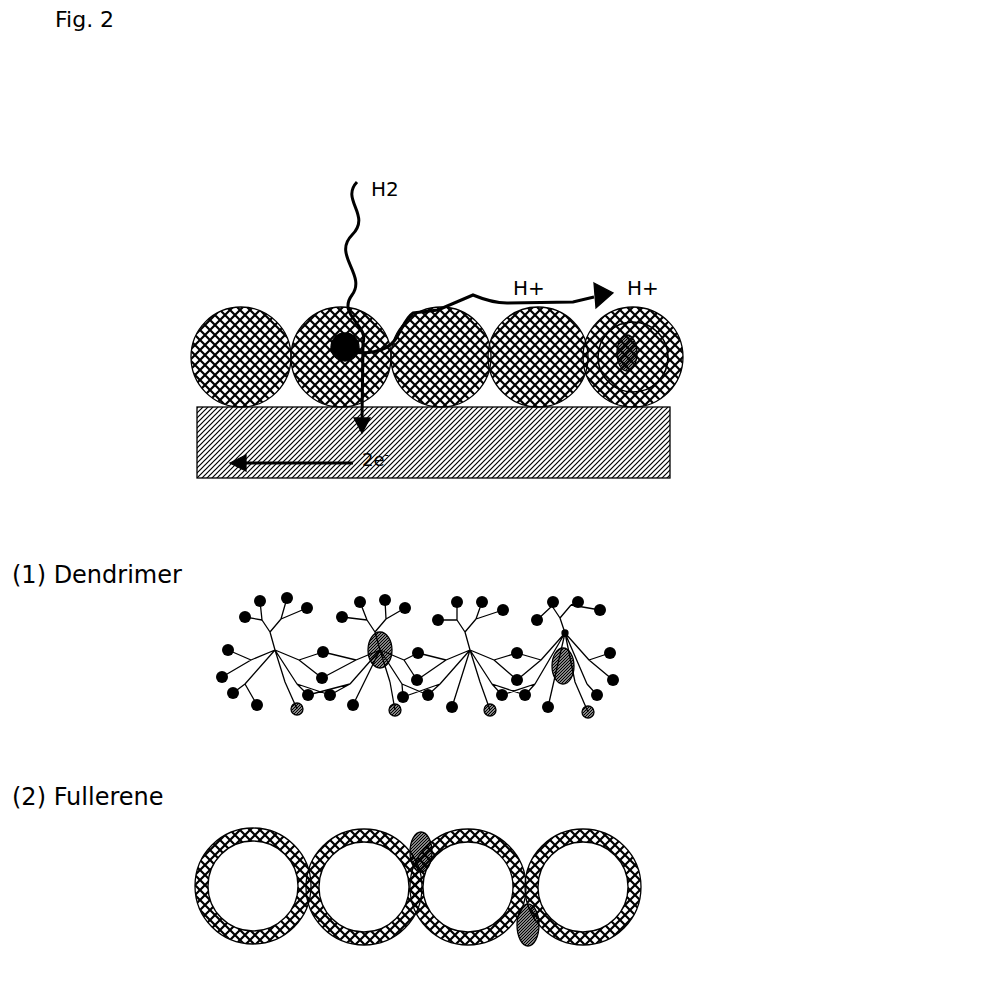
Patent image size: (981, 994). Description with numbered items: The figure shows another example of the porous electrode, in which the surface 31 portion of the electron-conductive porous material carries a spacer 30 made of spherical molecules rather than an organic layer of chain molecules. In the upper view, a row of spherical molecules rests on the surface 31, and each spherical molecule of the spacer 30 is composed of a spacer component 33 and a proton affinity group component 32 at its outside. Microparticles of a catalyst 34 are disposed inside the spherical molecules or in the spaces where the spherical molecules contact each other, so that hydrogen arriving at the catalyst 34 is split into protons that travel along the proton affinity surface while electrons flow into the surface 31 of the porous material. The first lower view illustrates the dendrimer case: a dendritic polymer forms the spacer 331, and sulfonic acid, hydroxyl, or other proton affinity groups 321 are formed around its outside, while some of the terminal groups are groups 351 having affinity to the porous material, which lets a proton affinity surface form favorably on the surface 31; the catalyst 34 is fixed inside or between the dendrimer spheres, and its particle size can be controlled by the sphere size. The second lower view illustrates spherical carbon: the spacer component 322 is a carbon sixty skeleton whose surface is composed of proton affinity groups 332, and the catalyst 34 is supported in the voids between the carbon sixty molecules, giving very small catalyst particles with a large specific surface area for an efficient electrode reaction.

The spacer 30 is at (531, 332).
The surface 31 is at (623, 445).
The proton affinity group component 32 is at (682, 370).
The spacer component 33 is at (677, 335).
The catalyst 34 is at (647, 317).
The spacer of a dendritic polymer 331 is at (570, 632).
The proton affinity groups 321 is at (616, 652).
The groups that have affinity to the porous material 351 is at (592, 714).
The proton affinity groups 332 is at (622, 850).
The spacer component 322 is at (590, 908).